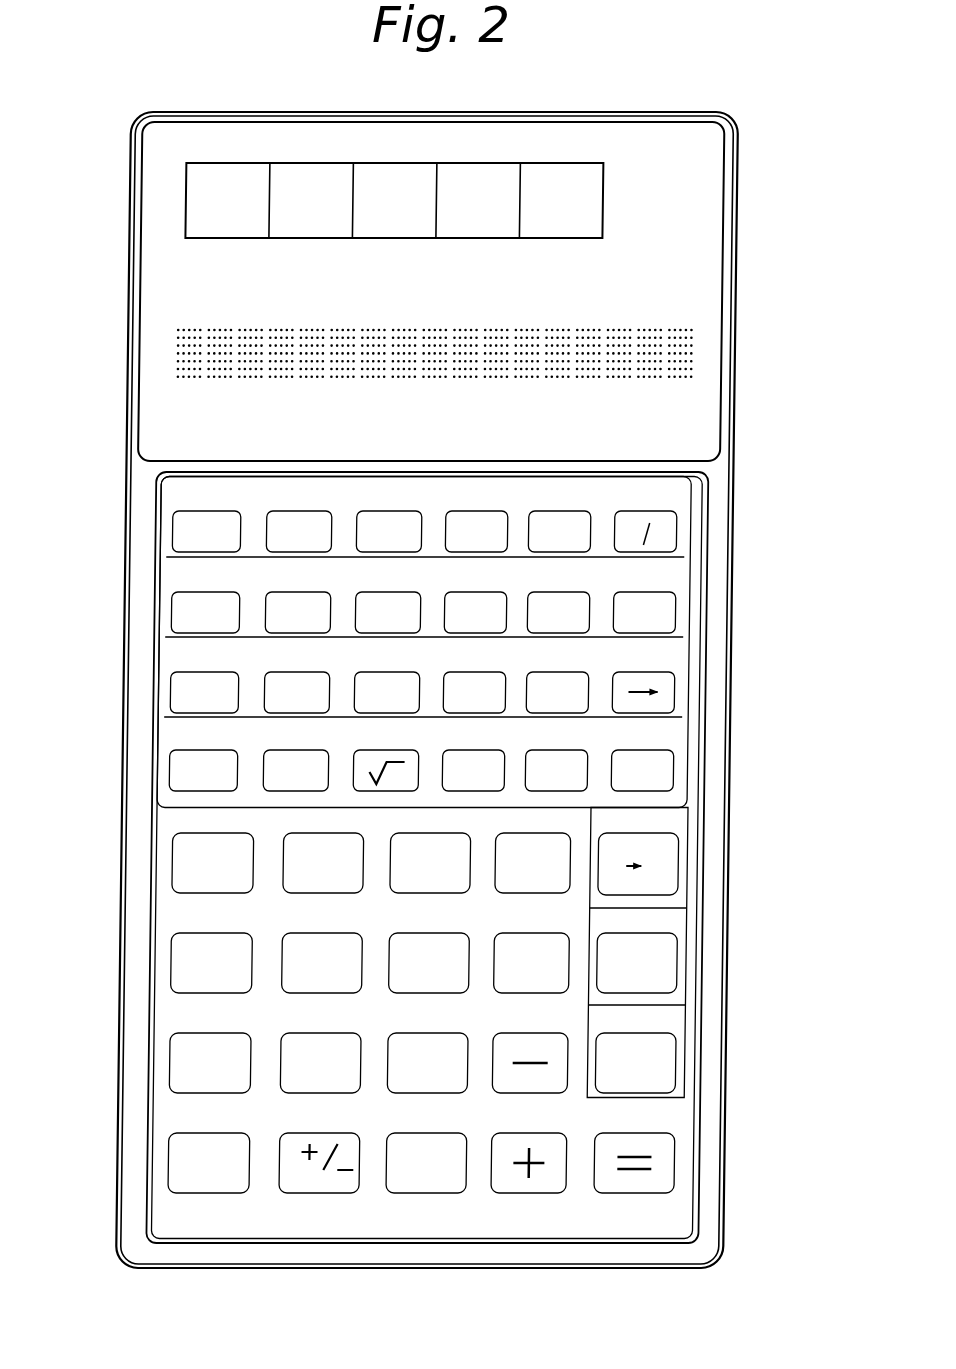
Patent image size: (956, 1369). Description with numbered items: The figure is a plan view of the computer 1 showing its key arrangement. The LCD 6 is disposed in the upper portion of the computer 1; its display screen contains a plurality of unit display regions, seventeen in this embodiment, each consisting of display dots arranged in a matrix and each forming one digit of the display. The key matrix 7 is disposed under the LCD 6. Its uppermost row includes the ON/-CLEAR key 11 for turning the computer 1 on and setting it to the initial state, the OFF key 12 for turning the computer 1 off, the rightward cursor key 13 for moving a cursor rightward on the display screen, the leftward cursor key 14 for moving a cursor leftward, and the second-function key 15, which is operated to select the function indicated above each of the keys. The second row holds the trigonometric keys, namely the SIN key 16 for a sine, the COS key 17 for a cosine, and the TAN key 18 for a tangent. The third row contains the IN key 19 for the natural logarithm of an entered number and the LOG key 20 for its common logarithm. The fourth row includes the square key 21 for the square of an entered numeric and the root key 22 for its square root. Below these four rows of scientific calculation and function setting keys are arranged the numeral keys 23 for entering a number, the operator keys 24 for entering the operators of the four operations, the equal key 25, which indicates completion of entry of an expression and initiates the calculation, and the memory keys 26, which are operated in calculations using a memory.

The computer 1 is at (760, 201).
The LCD 6 is at (673, 330).
The key matrix 7 is at (692, 602).
The ON/-CLEAR key 11 is at (628, 516).
The OFF key 12 is at (568, 516).
The rightward cursor key 13 is at (486, 516).
The leftward cursor key 14 is at (383, 516).
The second-function key 15 is at (200, 516).
The SIN key 16 is at (385, 600).
The COS key 17 is at (470, 600).
The TAN key 18 is at (555, 600).
The IN key 19 is at (384, 682).
The LOG key 20 is at (470, 682).
The square key 21 is at (496, 760).
The root key 22 is at (393, 760).
The numeral keys 23 is at (172, 1048).
The operator keys 24 is at (577, 1198).
The equal key 25 is at (641, 1140).
The memory keys 26 is at (692, 950).